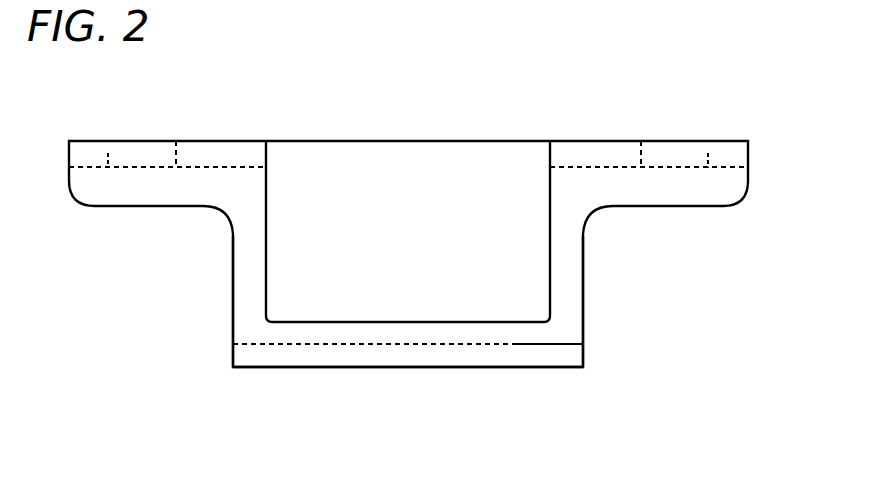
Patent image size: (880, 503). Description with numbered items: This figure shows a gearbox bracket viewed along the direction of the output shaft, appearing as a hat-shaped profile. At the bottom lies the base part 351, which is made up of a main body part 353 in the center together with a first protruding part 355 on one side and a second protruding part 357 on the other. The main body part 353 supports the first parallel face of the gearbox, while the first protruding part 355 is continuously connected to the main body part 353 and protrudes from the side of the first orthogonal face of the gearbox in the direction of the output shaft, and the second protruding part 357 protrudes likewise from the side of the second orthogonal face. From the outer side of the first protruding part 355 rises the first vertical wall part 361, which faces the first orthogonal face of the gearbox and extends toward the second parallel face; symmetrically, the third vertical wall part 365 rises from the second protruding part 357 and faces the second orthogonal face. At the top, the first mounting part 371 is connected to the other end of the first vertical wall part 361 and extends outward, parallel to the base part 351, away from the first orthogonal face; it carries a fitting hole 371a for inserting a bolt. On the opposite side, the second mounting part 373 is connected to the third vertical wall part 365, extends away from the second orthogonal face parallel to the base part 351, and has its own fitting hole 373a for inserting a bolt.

The base part 351 is at (265, 439).
The main body part 353 is at (416, 355).
The first protruding part 355 is at (280, 355).
The second protruding part 357 is at (570, 355).
The first vertical wall part 361 is at (252, 272).
The third vertical wall part 365 is at (565, 271).
The first mounting part 371 is at (205, 141).
The fitting hole 371a is at (107, 153).
The second mounting part 373 is at (598, 141).
The fitting hole 373a is at (708, 153).